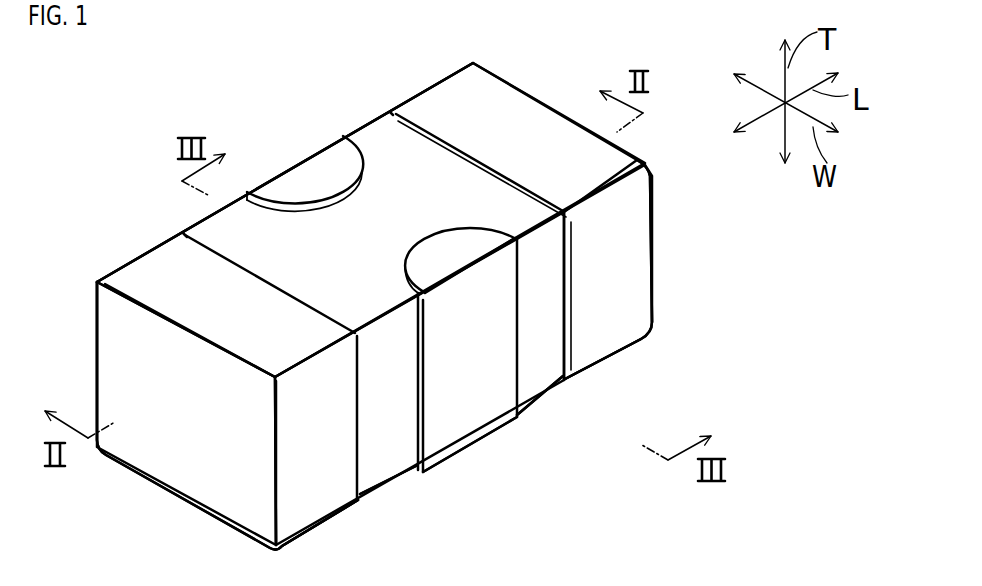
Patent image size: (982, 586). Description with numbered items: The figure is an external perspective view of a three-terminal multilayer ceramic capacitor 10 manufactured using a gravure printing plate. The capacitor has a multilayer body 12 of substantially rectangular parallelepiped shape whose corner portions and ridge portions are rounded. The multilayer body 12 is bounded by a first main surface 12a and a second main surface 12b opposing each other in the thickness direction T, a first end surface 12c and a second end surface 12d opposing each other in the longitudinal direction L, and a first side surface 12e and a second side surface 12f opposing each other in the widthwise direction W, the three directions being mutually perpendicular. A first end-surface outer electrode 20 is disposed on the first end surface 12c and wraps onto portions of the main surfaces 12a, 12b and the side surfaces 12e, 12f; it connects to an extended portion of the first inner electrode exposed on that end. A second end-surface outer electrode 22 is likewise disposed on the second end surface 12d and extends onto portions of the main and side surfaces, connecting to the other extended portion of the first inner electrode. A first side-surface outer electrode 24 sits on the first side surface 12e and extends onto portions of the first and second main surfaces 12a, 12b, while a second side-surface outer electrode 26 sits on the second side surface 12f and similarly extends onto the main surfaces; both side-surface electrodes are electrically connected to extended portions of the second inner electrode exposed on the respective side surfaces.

The multilayer ceramic capacitor 10 is at (158, 84).
The multilayer body 12 is at (548, 389).
The first main surface 12a is at (380, 157).
The second main surface 12b is at (379, 485).
The first end surface 12c is at (173, 440).
The second end surface 12d is at (627, 181).
The first side surface 12e is at (205, 228).
The second side surface 12f is at (383, 440).
The first end-surface outer electrode 20 is at (187, 503).
The second end-surface outer electrode 22 is at (655, 242).
The first side-surface outer electrode 24 is at (295, 157).
The second side-surface outer electrode 26 is at (477, 407).